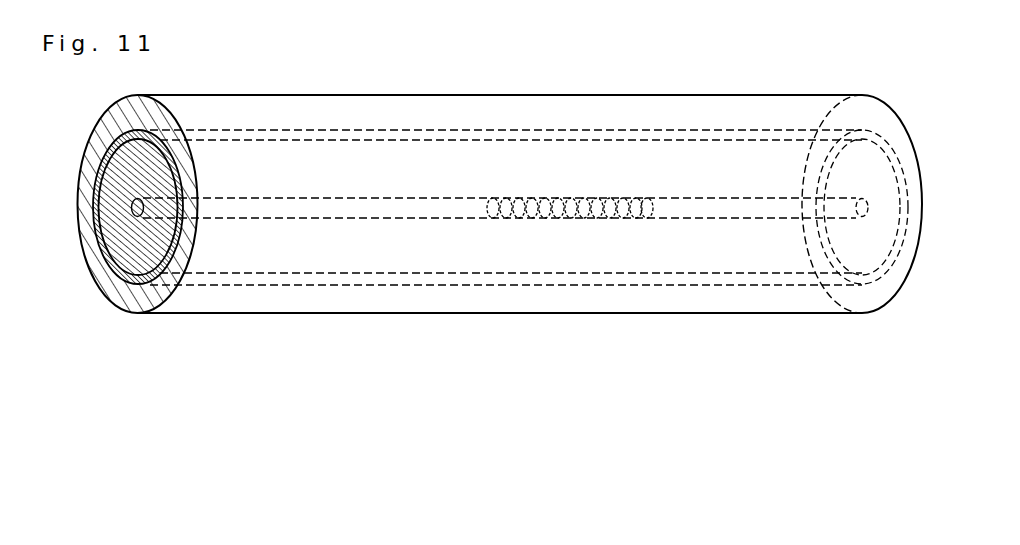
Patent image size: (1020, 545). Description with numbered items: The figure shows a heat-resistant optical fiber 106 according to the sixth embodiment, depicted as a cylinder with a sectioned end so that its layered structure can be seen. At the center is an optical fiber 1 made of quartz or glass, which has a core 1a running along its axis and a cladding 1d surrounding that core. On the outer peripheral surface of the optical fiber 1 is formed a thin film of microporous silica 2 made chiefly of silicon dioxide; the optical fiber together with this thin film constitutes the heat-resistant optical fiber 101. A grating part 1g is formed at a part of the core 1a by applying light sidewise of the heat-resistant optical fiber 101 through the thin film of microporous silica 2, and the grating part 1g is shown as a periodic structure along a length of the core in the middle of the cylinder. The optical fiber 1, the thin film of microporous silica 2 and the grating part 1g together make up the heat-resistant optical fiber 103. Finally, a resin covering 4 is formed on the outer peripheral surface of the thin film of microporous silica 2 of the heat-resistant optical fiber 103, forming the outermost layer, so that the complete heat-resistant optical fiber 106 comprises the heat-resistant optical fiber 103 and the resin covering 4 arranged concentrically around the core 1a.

The heat-resistant optical fiber 106 is at (514, 61).
The heat-resistant optical fiber 103 is at (378, 480).
The heat-resistant optical fiber 101 is at (223, 420).
The optical fiber 1 is at (125, 367).
The core 1a is at (139, 213).
The cladding 1d is at (137, 207).
The grating part 1g is at (649, 198).
The thin film of microporous silica 2 is at (183, 240).
The resin covering 4 is at (195, 235).